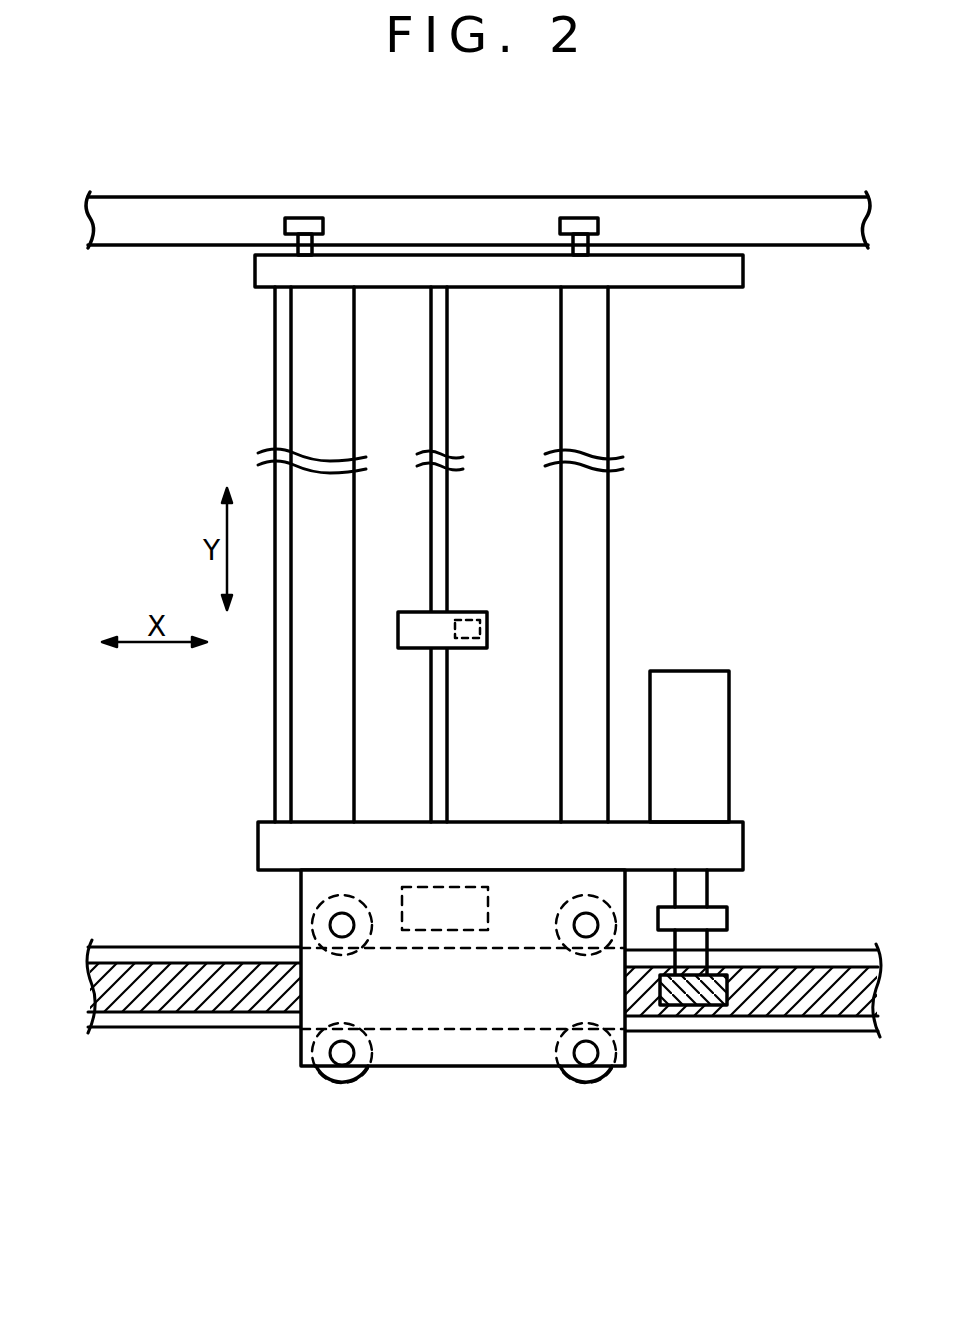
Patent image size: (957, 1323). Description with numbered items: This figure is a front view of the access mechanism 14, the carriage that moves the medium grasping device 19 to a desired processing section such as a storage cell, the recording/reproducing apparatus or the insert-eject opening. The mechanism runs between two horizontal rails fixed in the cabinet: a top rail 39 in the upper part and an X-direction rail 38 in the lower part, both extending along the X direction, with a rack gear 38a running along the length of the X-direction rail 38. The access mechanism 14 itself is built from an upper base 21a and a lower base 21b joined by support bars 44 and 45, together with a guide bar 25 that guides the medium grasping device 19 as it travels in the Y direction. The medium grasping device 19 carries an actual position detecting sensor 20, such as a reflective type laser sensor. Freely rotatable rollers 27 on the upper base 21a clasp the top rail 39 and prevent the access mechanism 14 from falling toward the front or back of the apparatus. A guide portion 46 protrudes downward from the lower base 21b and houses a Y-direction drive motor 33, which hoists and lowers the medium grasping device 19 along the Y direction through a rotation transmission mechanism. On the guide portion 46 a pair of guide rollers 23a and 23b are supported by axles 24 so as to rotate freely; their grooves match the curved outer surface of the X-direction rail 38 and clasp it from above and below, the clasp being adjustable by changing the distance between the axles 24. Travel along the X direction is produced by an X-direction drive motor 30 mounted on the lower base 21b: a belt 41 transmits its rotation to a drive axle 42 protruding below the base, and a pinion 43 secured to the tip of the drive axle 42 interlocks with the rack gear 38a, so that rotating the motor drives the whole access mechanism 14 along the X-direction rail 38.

The access mechanism 14 is at (260, 420).
The medium grasping device 19 is at (464, 612).
The actual position detecting sensor 20 is at (482, 629).
The upper base 21a is at (726, 287).
The lower base 21b is at (268, 847).
The guide roller 23a is at (312, 925).
The guide roller 23b is at (332, 1086).
The axles 24 is at (343, 933).
The guide bar 25 is at (437, 368).
The rollers 27 is at (303, 226).
The X-direction drive motor 30 is at (731, 708).
The Y-direction drive motor 33 is at (456, 931).
The X-direction rail 38 is at (172, 1028).
The rack gear 38a is at (803, 1018).
The top rail 39 is at (170, 245).
The belt 41 is at (729, 921).
The drive axle 42 is at (709, 888).
The pinion 43 is at (735, 990).
The support bar 44 is at (303, 364).
The support bar 45 is at (590, 372).
The guide portion 46 is at (474, 1050).